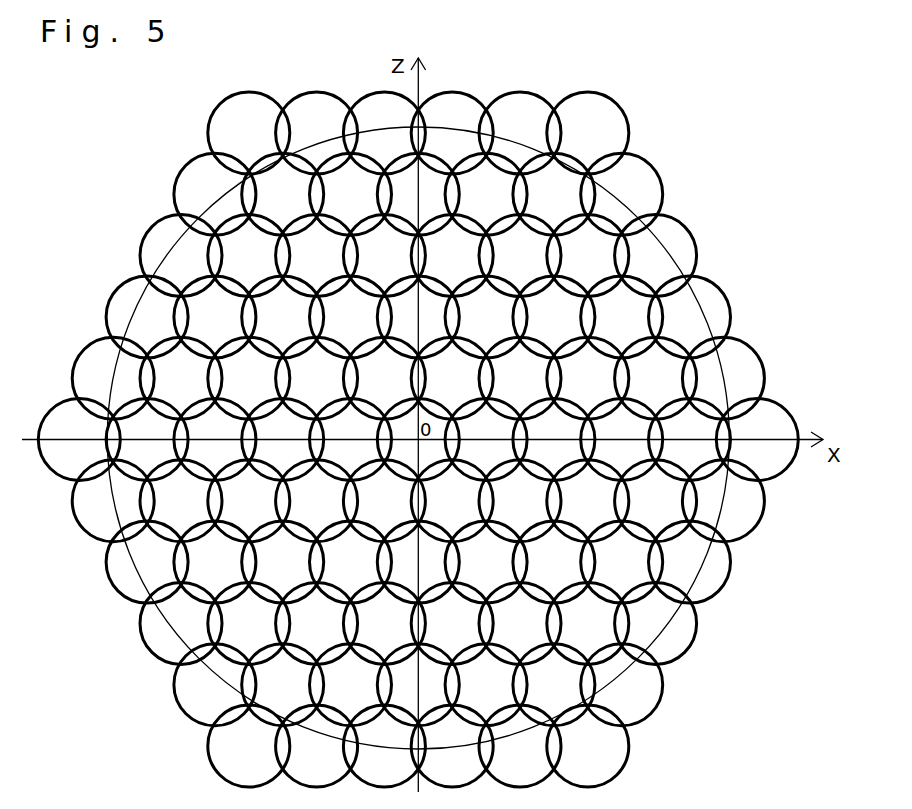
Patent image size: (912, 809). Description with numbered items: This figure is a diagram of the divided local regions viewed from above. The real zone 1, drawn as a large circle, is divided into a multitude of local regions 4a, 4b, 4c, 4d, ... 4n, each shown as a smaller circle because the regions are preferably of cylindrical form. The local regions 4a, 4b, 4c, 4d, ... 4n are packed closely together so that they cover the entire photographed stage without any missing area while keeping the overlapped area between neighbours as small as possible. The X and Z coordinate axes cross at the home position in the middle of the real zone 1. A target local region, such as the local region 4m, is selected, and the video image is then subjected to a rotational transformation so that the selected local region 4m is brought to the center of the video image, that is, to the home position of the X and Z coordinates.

The real zone 1 is at (729, 498).
The local region 4a is at (642, 178).
The local region 4b is at (682, 242).
The local region 4c is at (716, 302).
The local region 4d is at (750, 363).
The target local region 4m is at (533, 625).
The local region 4n is at (316, 381).